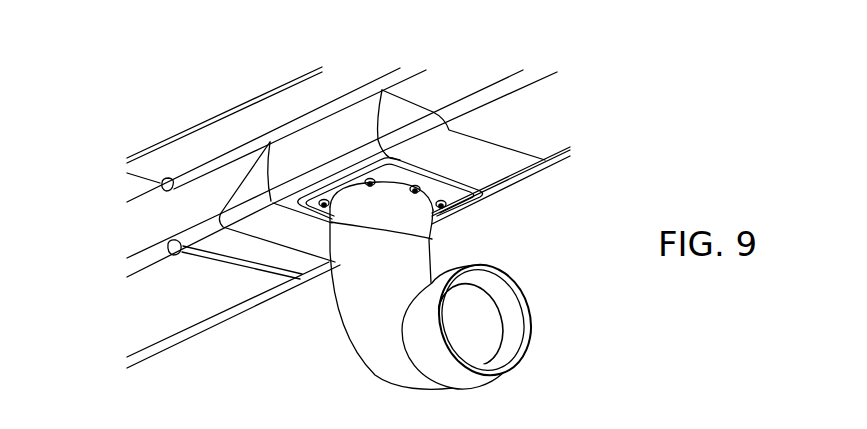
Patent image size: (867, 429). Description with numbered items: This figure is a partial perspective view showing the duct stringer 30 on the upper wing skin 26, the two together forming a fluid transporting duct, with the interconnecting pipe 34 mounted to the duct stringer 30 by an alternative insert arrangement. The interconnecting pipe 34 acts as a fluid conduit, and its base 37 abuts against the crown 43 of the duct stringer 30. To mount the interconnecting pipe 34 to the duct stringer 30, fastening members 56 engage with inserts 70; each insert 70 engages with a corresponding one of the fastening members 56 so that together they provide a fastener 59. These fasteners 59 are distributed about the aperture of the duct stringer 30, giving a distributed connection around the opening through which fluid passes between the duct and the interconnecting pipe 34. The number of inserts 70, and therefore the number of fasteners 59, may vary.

The upper wing skin 26 is at (265, 84).
The crown 43 is at (148, 317).
The duct stringer 30 is at (428, 90).
The base 37 is at (431, 200).
The fastening members 56 is at (444, 206).
The fastener 59 is at (416, 191).
The insert 70 is at (463, 207).
The interconnecting pipe 34 is at (348, 314).